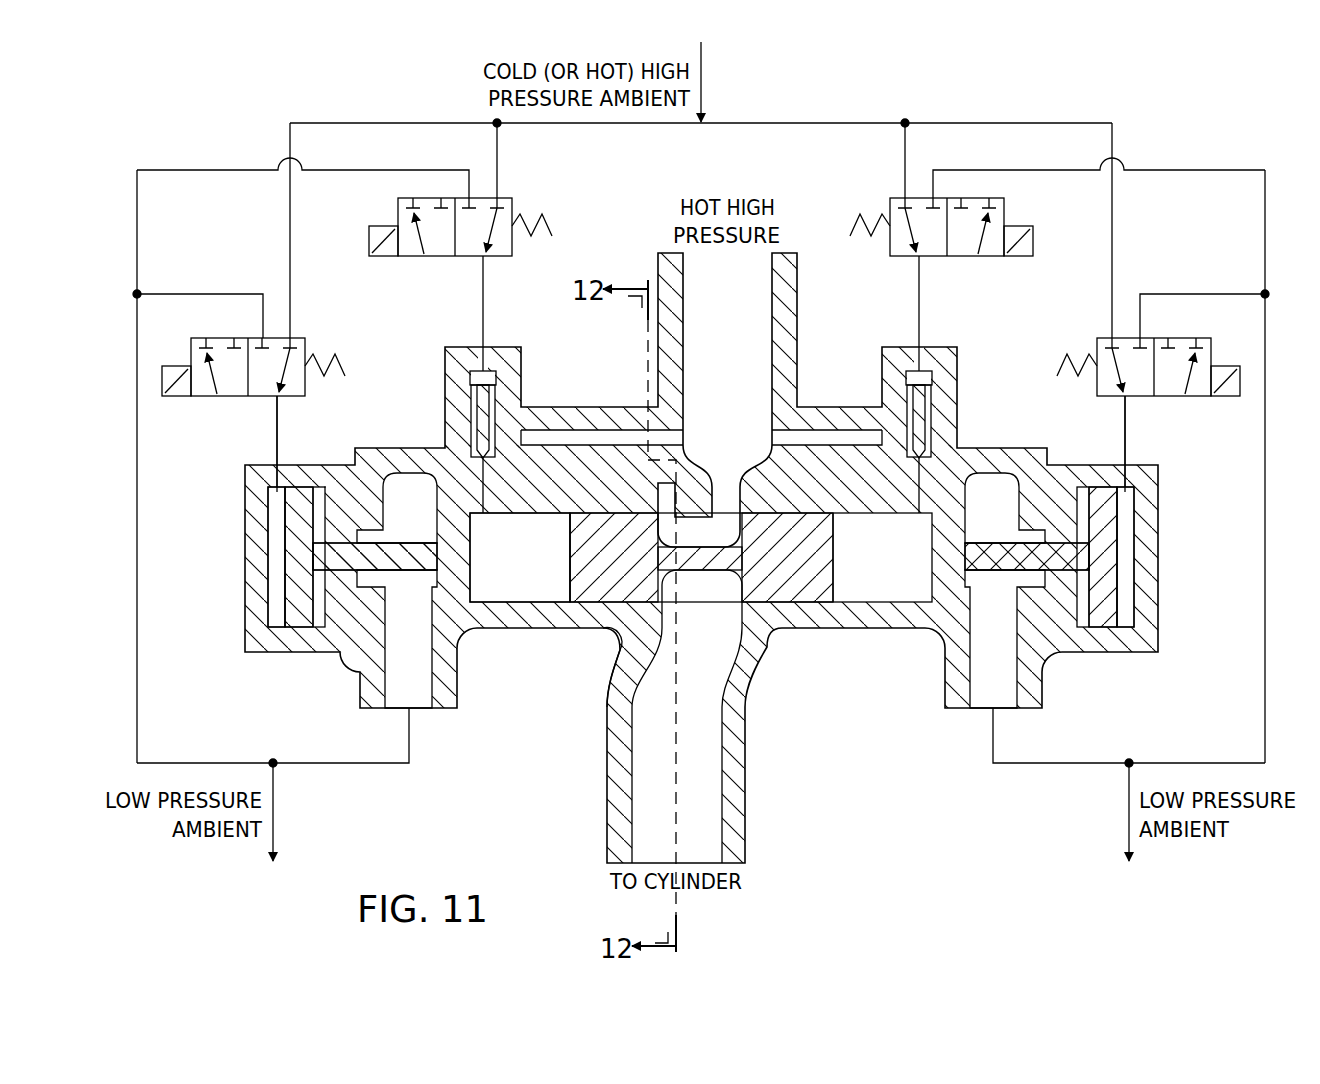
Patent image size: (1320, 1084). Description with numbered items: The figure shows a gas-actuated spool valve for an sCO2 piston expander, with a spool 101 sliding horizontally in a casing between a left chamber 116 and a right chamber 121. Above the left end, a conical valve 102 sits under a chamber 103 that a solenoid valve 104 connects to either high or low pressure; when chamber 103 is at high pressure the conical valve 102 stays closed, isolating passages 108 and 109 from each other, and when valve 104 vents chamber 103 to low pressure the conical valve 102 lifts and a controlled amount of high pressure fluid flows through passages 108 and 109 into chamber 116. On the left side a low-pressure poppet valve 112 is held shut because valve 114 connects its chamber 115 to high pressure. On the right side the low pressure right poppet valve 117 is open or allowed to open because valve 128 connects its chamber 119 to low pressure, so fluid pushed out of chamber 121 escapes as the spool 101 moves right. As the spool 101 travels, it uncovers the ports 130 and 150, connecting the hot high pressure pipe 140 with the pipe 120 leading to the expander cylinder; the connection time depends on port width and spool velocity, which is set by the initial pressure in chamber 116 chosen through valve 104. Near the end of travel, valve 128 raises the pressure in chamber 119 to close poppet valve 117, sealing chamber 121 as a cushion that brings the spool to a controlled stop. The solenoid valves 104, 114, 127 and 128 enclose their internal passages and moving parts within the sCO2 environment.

The spool 101 is at (825, 557).
The conical valve 102 is at (486, 402).
The chamber 103 is at (470, 380).
The valve 104 is at (410, 257).
The passage 108 is at (600, 440).
The passage 109 is at (483, 473).
The low-pressure poppet valve 112 is at (292, 577).
The valve 114 is at (203, 400).
The chamber 115 is at (270, 515).
The chamber 116 is at (542, 593).
The low pressure right poppet valve 117 is at (1110, 577).
The chamber 119 is at (1127, 533).
The pipe 120 is at (640, 765).
The chamber 121 is at (903, 597).
The solenoid valve 127 is at (992, 258).
The valve 128 is at (1199, 400).
The port 130 is at (670, 617).
The pipe 140 is at (765, 317).
The port 150 is at (767, 640).